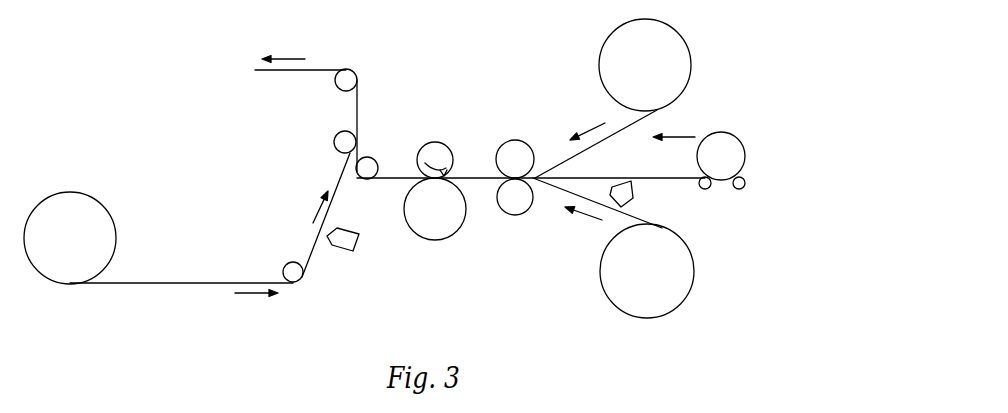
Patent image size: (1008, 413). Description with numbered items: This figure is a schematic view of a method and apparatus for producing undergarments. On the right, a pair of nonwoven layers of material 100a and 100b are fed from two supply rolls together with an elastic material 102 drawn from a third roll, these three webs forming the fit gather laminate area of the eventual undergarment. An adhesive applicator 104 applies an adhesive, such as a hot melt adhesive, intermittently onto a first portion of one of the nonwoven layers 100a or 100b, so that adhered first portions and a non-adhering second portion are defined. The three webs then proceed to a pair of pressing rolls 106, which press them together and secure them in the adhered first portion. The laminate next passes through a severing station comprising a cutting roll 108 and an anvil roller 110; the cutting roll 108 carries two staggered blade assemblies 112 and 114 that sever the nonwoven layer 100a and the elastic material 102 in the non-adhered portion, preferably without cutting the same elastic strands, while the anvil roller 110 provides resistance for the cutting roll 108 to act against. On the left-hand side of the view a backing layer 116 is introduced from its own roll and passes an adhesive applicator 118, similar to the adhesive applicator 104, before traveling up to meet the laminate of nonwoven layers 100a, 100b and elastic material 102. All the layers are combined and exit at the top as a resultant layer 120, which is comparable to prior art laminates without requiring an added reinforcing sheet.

The nonwoven layer of material 100a is at (691, 62).
The nonwoven layer of material 100b is at (643, 318).
The elastic material 102 is at (720, 181).
The adhesive applicator 104 is at (634, 192).
The pressing rolls 106 is at (487, 177).
The cutting roll 108 is at (396, 101).
The anvil roller 110 is at (437, 233).
The blade assembly 112 is at (420, 157).
The blade assembly 114 is at (443, 173).
The backing layer 116 is at (69, 193).
The adhesive applicator 118 is at (358, 245).
The resultant layer 120 is at (287, 57).